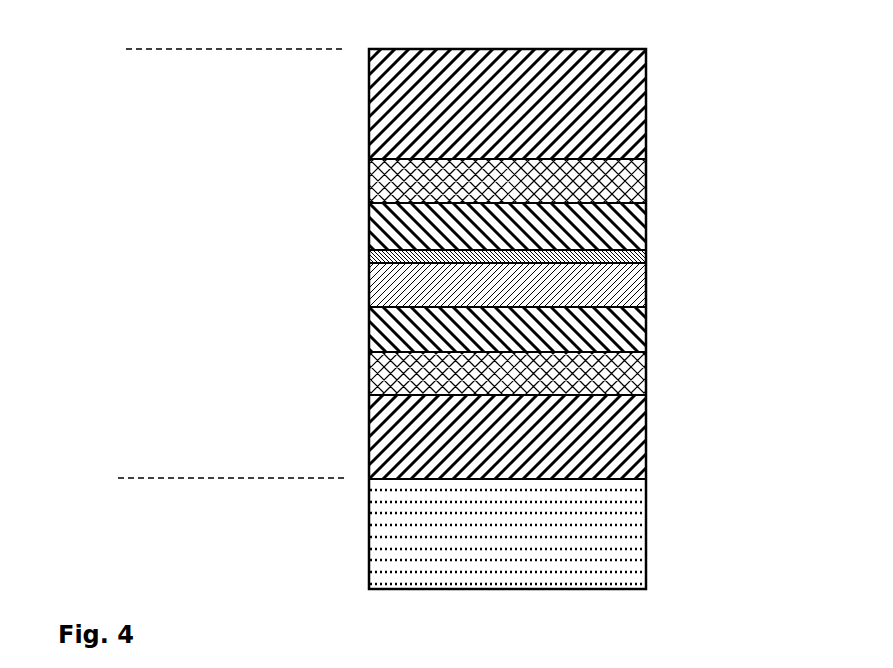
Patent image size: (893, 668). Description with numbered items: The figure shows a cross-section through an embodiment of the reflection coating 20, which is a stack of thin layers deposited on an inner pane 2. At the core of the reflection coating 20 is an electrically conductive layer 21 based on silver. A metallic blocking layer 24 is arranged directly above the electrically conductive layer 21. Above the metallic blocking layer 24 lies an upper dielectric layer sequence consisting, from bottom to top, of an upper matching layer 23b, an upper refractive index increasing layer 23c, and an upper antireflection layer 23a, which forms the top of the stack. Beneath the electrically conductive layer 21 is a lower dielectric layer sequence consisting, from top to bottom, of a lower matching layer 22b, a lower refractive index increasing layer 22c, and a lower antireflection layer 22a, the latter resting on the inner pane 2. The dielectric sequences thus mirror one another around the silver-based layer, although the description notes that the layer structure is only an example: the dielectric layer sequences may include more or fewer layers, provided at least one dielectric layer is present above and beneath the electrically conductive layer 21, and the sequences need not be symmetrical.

The reflection coating 20 is at (68, 50).
The upper antireflection layer 23a is at (630, 107).
The upper refractive index increasing layer 23c is at (397, 183).
The upper matching layer 23b is at (635, 224).
The metallic blocking layer 24 is at (635, 257).
The electrically conductive layer 21 is at (397, 282).
The lower matching layer 22b is at (637, 337).
The lower refractive index increasing layer 22c is at (397, 378).
The lower antireflection layer 22a is at (637, 424).
The inner pane 2 is at (618, 538).